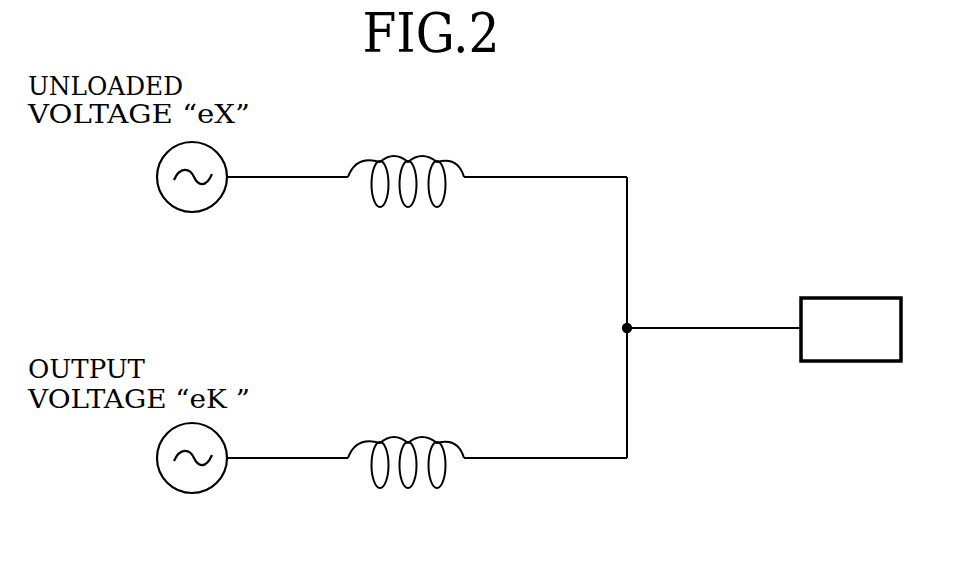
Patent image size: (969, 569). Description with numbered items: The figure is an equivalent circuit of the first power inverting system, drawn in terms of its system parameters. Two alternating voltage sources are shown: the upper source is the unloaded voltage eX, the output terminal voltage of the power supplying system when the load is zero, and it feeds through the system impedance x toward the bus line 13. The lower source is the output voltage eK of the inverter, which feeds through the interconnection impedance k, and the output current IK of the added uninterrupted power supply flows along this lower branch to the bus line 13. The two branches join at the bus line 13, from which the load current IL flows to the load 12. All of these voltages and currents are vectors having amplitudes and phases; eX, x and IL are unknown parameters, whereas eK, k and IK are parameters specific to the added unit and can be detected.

The load 12 is at (852, 272).
The bus line 13 is at (628, 414).
The impedance of the power supplying system x is at (406, 171).
The impedance of the interconnection impedance k is at (406, 450).
The load current IL is at (672, 304).
The output current of the UPS IK is at (510, 443).